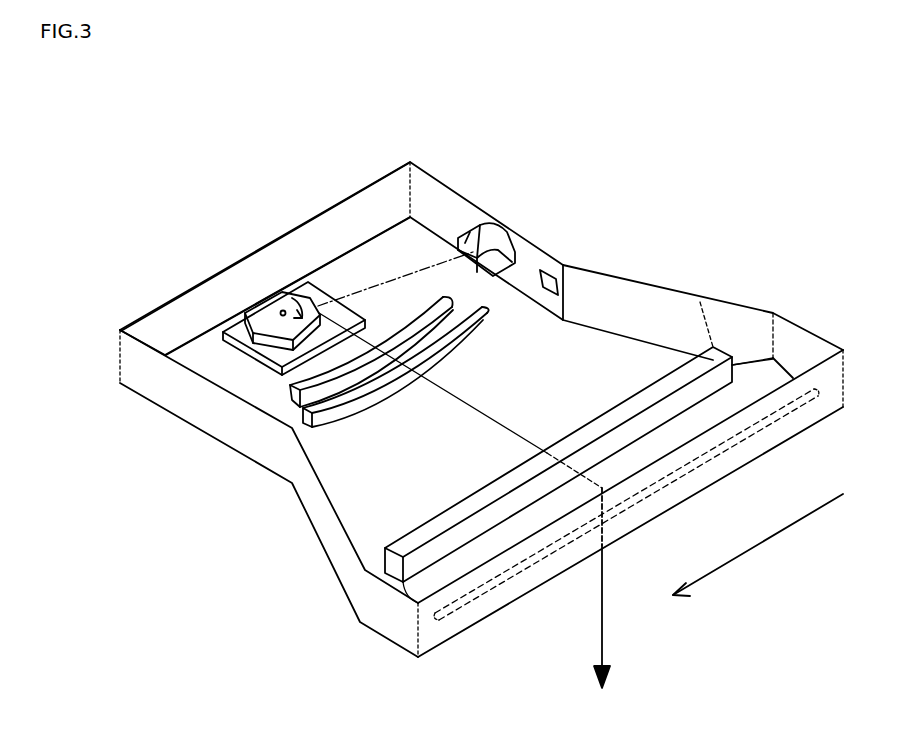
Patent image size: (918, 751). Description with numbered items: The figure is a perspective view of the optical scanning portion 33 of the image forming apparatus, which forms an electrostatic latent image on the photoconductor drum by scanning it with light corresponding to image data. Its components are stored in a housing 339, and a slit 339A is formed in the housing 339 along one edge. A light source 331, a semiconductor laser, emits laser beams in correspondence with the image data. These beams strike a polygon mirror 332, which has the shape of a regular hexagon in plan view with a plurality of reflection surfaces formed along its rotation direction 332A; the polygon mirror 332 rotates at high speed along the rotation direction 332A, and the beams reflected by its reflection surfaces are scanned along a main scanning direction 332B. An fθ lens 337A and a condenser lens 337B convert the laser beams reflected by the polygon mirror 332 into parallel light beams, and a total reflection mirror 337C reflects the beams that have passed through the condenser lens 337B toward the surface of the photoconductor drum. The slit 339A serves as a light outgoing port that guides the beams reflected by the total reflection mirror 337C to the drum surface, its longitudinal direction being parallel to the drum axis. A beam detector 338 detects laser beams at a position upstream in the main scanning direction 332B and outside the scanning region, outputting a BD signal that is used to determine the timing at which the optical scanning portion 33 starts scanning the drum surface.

The optical scanning portion 33 is at (567, 176).
The light source 331 is at (492, 222).
The polygon mirror 332 is at (263, 312).
The rotation direction 332A is at (312, 294).
The main scanning direction 332B is at (757, 547).
The fθ lens 337A is at (293, 400).
The condenser lens 337B is at (715, 347).
The total reflection mirror 337C is at (775, 356).
The beam detector 338 is at (536, 275).
The housing 339 is at (330, 207).
The slit 339A is at (507, 583).